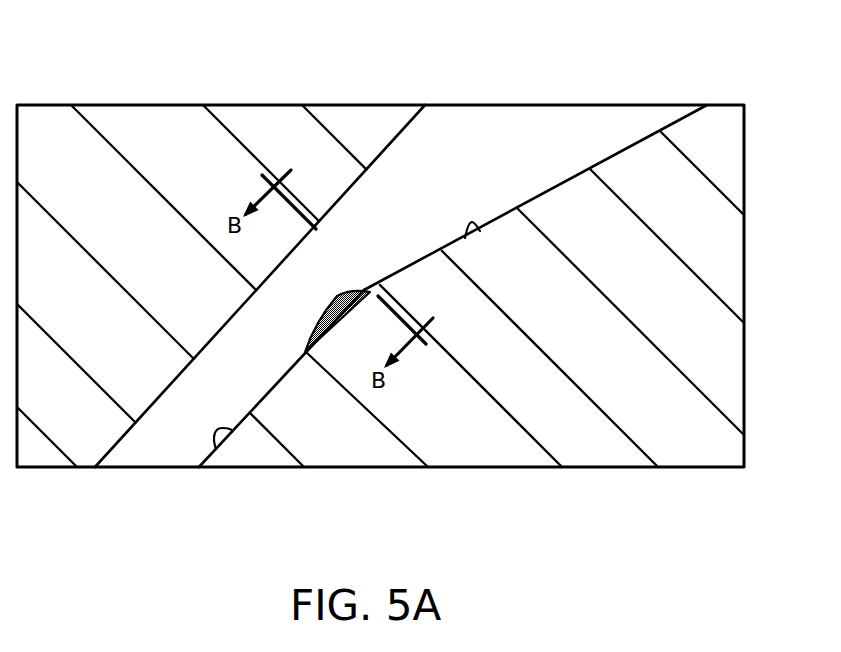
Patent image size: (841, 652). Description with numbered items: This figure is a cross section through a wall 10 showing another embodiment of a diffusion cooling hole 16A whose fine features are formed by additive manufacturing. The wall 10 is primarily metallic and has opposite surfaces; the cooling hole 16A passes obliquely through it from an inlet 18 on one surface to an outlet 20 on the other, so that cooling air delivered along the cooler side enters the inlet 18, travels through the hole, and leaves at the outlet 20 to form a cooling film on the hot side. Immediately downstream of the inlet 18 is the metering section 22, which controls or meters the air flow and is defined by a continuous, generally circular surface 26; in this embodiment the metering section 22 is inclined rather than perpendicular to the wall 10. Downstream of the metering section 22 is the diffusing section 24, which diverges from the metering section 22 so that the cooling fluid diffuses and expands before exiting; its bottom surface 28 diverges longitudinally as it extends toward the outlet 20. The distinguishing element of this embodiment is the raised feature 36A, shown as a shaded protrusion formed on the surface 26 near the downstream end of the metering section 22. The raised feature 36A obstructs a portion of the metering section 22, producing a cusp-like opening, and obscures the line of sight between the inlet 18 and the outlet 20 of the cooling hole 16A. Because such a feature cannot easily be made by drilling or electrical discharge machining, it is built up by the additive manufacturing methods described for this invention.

The wall 10 is at (113, 105).
The inlet 18 is at (167, 468).
The outlet 20 is at (540, 105).
The metering section 22 is at (249, 350).
The diffusing section 24 is at (439, 136).
The cooling hole 16A is at (452, 184).
The raised feature 36A is at (337, 294).
The surface 26 is at (218, 440).
The bottom surface 28 is at (481, 236).